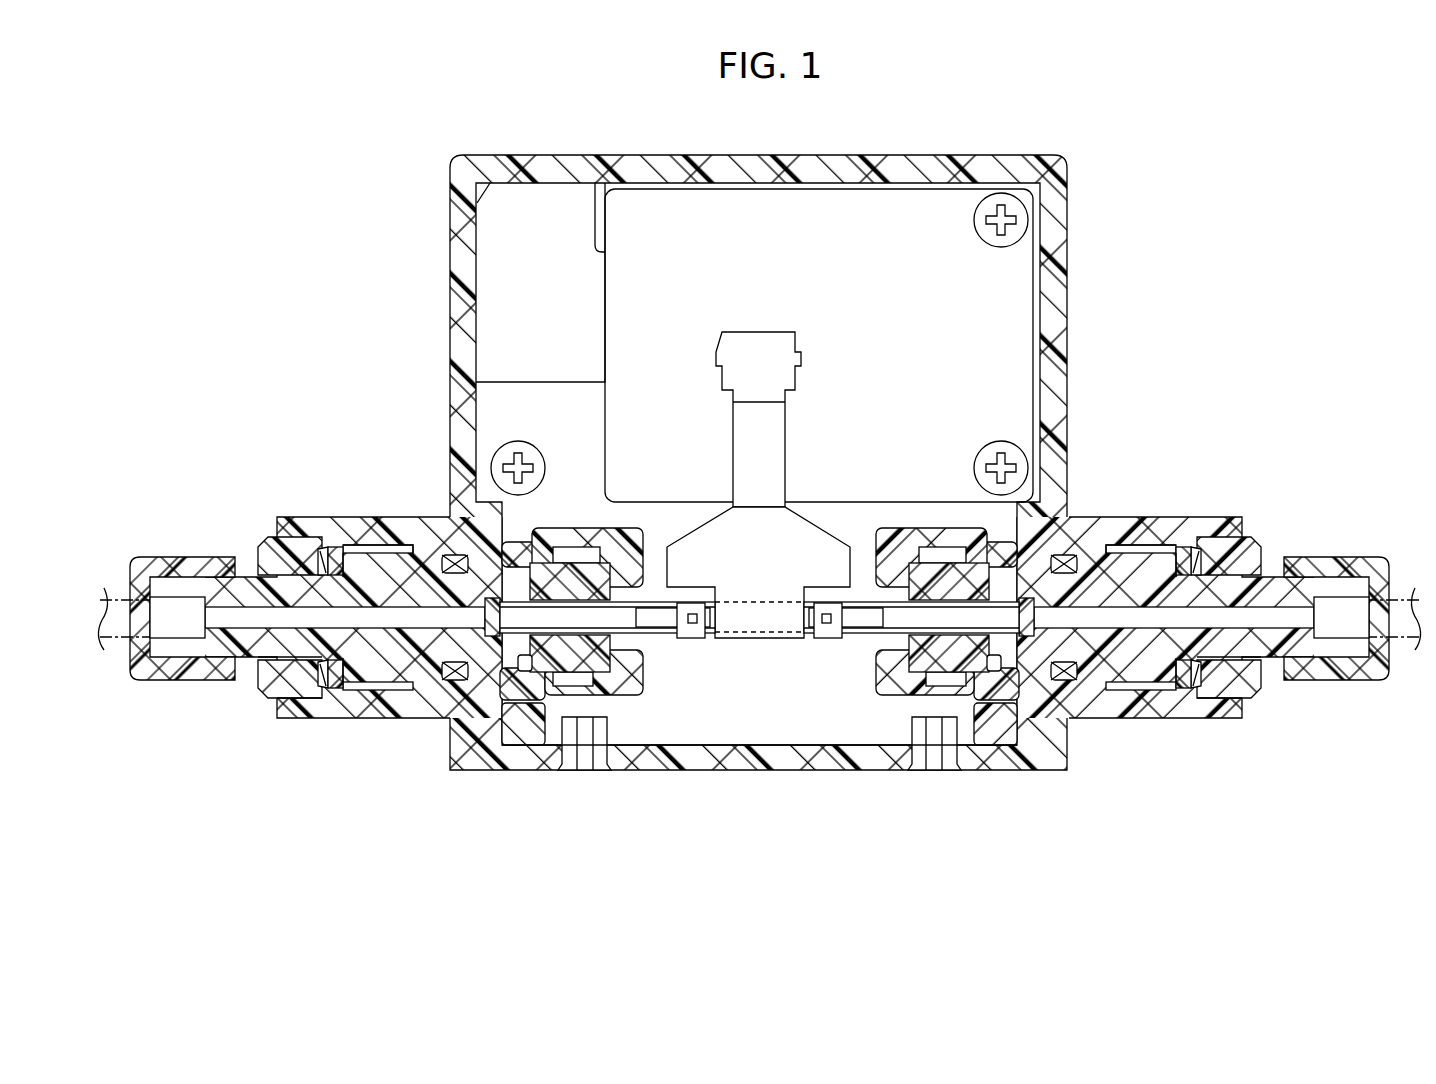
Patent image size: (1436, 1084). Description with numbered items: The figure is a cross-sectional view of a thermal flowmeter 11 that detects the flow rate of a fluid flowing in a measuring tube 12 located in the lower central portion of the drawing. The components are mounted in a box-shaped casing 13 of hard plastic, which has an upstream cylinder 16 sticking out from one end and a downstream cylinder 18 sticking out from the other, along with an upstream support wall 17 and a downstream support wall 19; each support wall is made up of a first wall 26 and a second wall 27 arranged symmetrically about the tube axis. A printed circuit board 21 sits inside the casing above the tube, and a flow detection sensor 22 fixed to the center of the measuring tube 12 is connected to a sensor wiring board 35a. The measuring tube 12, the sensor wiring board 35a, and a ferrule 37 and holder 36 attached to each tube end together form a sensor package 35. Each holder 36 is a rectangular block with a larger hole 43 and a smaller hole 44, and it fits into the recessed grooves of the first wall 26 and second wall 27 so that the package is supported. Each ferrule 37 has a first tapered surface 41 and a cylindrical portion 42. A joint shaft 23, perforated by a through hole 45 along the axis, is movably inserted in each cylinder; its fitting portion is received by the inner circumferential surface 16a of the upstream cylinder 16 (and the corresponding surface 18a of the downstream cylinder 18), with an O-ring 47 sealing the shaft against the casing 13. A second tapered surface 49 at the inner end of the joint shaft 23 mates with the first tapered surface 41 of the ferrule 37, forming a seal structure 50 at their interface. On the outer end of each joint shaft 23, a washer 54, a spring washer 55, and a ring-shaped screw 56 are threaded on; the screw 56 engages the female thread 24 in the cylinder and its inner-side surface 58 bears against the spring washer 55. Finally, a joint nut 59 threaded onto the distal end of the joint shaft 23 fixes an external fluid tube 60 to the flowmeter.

The thermal flowmeter 11 is at (1328, 218).
The measuring tube 12 is at (760, 640).
The casing 13 is at (1072, 203).
The upstream cylinder 16 is at (329, 720).
The inner circumferential surface 16a is at (437, 580).
The upstream support wall 17 is at (632, 527).
The downstream cylinder 18 is at (1190, 720).
The joint end portion 18a is at (1082, 580).
The downstream support wall 19 is at (888, 527).
The printed circuit board 21 is at (757, 248).
The flow detection sensor 22 is at (692, 640).
The joint shaft 23 is at (371, 720).
The female thread 24 is at (262, 545).
The first wall 26 is at (650, 572).
The second wall 27 is at (643, 678).
The sensor package 35 is at (718, 640).
The sensor wiring board 35a is at (785, 425).
The holder 36 is at (583, 653).
The ferrule 37 is at (578, 653).
The first tapered surface 41 is at (541, 655).
The cylindrical portion 42 is at (597, 717).
The larger hole 43 is at (570, 673).
The smaller hole 44 is at (593, 665).
The through hole 45 is at (383, 563).
The O-ring 47 is at (452, 678).
The second tapered surface 49 is at (490, 668).
The seal structure 50 is at (530, 660).
The washer 54 is at (338, 550).
The spring washer 55 is at (322, 548).
The screw 56 is at (262, 682).
The inner-side surface 58 is at (316, 700).
The joint nut 59 is at (175, 560).
The fluid tube 60 is at (130, 600).